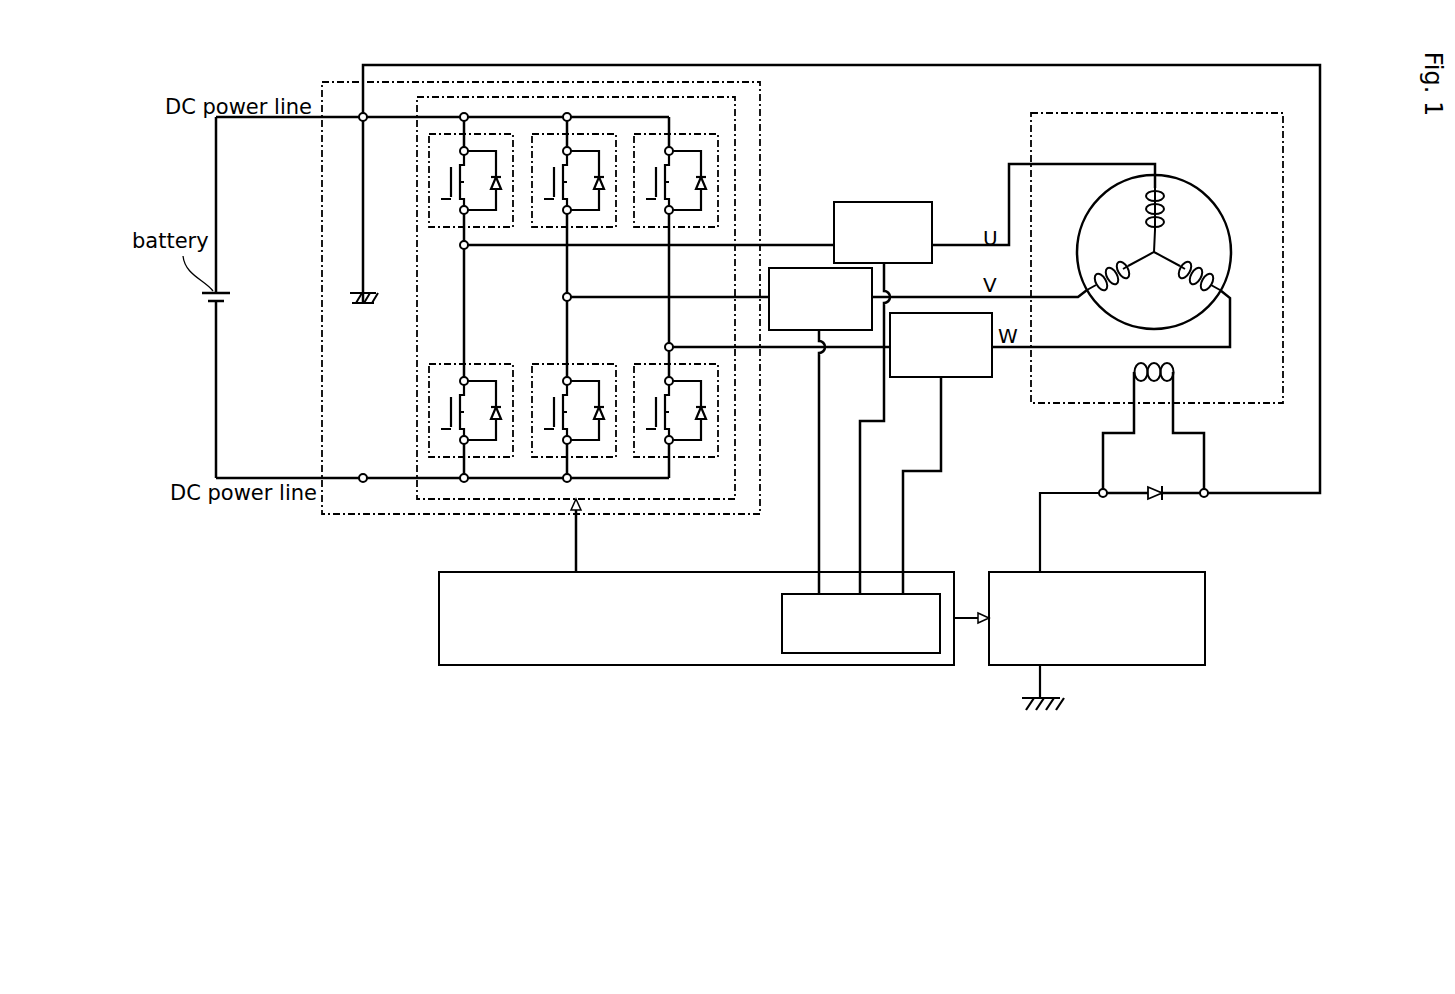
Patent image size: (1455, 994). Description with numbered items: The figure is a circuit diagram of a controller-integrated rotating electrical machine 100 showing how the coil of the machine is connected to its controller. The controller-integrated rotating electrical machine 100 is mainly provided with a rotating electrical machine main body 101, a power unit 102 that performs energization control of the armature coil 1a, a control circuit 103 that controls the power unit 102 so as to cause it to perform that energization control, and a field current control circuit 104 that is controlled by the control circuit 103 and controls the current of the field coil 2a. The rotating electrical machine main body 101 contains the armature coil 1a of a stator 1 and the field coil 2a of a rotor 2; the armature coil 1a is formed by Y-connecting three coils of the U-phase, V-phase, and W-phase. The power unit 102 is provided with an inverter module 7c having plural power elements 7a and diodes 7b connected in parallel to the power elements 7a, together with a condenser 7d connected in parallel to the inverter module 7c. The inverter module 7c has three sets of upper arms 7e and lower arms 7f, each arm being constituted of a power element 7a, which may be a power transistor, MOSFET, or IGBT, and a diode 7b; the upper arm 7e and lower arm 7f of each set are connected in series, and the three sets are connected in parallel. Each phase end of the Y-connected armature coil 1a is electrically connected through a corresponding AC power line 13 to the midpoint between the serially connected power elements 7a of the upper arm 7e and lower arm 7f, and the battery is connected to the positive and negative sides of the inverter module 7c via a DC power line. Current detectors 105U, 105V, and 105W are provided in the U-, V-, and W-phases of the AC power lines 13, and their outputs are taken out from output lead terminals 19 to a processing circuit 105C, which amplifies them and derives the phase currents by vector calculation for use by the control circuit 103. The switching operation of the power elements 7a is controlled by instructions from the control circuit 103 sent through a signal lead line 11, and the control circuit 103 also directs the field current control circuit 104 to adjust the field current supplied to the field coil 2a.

The controller-integrated rotating electrical machine 100 is at (940, 47).
The rotating electrical machine main body 101 is at (1152, 113).
The power unit 102 is at (770, 47).
The control circuit 103 is at (439, 618).
The field current control circuit 104 is at (1207, 614).
The U-phase current detector 105U is at (884, 202).
The V-phase current detector 105V is at (813, 268).
The W-phase current detector 105W is at (963, 377).
The processing circuit 105C is at (940, 594).
The stator 1 is at (1157, 202).
The armature coil 1a is at (1180, 193).
The rotor 2 is at (1127, 372).
The field coil 2a is at (1183, 372).
The power element 7a is at (448, 200).
The diode 7b is at (496, 213).
The inverter module 7c is at (684, 97).
The condenser 7d is at (366, 291).
The upper arm 7e is at (430, 165).
The lower arm 7f is at (428, 424).
The signal lead line 11 is at (576, 548).
The AC power line 13 is at (949, 297).
The output lead terminal 19 is at (818, 467).